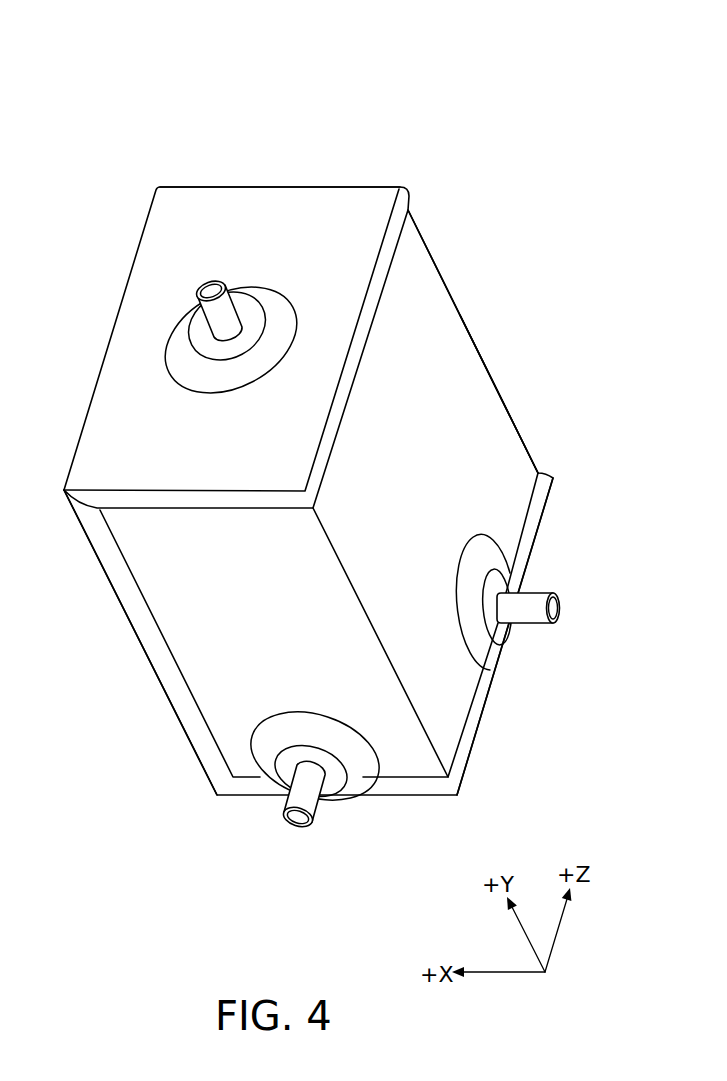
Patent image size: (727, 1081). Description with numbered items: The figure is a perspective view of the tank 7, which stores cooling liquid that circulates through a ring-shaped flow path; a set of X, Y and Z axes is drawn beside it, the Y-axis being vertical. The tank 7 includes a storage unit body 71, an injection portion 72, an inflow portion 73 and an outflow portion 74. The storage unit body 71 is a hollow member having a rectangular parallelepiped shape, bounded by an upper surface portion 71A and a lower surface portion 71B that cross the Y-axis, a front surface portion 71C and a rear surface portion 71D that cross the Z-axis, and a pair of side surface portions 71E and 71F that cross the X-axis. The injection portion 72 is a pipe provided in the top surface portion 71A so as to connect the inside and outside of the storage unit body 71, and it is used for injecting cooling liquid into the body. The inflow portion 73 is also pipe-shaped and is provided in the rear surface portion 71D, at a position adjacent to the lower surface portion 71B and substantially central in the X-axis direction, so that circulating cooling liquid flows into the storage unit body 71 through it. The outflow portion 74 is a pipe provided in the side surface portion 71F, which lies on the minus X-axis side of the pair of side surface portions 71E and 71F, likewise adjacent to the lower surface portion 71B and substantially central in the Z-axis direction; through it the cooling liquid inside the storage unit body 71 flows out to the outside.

The tank 7 is at (97, 107).
The storage unit body 71 is at (437, 305).
The upper surface portion 71A is at (357, 216).
The lower surface portion 71B is at (484, 705).
The front surface portion 71C is at (481, 355).
The rear surface portion 71D is at (200, 670).
The side surface portion 71E is at (141, 645).
The side surface portion 71F is at (492, 418).
The injection portion 72 is at (228, 301).
The inflow portion 73 is at (315, 803).
The outflow portion 74 is at (532, 598).